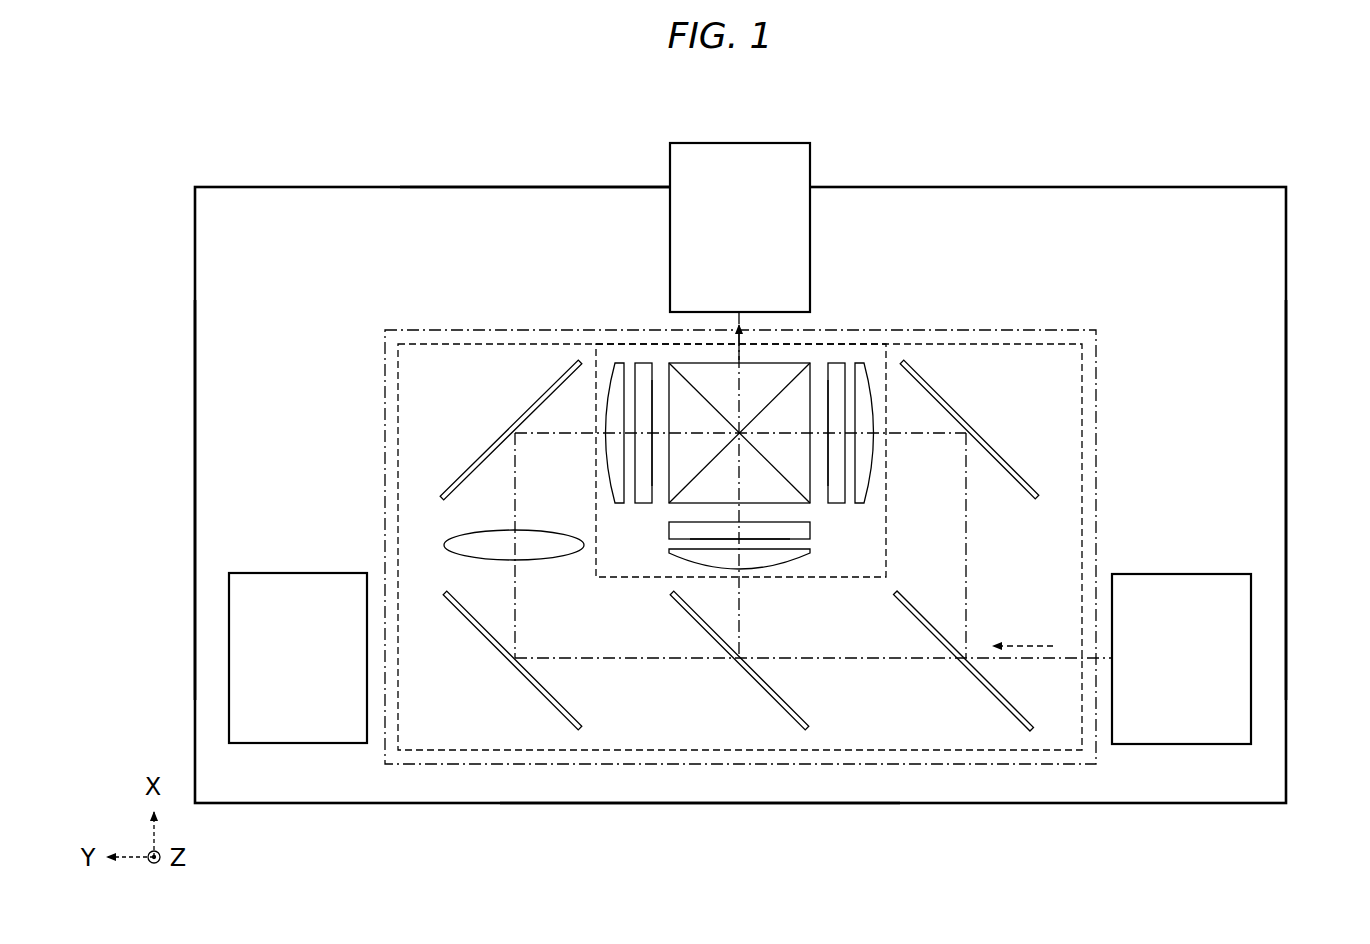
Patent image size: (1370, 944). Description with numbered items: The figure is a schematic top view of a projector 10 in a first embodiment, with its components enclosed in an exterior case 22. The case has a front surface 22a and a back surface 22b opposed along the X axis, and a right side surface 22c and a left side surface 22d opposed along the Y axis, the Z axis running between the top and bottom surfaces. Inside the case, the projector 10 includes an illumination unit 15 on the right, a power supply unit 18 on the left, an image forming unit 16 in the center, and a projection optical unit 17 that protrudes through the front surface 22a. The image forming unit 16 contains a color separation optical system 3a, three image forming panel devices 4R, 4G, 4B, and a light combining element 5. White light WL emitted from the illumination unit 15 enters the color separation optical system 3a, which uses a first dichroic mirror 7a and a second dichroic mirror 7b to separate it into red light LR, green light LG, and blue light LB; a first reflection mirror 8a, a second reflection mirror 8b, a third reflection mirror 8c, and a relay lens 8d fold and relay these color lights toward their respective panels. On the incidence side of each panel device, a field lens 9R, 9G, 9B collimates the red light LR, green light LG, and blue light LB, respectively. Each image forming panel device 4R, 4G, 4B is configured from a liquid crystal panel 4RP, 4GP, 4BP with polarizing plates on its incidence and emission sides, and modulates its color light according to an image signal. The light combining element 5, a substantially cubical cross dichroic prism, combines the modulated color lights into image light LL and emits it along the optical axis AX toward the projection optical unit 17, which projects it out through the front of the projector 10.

The projector 10 is at (398, 147).
The exterior case 22 is at (317, 182).
The front surface 22a is at (527, 186).
The back surface 22b is at (678, 804).
The right side surface 22c is at (1286, 520).
The left side surface 22d is at (195, 362).
The projection optical unit 17 is at (812, 157).
The image forming unit 16 is at (1099, 326).
The color separation optical system 3a is at (1082, 490).
The illumination unit 15 is at (1178, 744).
The power supply unit 18 is at (297, 744).
The light combining element 5 is at (722, 372).
The image forming panel device 4B is at (642, 358).
The liquid crystal panel 4BP is at (641, 380).
The field lens 9B is at (610, 368).
The image forming panel device 4R is at (838, 358).
The liquid crystal panel 4RP is at (840, 380).
The field lens 9R is at (862, 372).
The image forming panel device 4G is at (662, 524).
The liquid crystal panel 4GP is at (805, 530).
The field lens 9G is at (800, 553).
The first reflection mirror 8a is at (995, 440).
The second reflection mirror 8b is at (492, 640).
The third reflection mirror 8c is at (485, 456).
The relay lens 8d is at (450, 543).
The first dichroic mirror 7a is at (988, 697).
The second dichroic mirror 7b is at (762, 697).
The optical axis AX is at (742, 342).
The image light LL is at (732, 332).
The blue light LB is at (517, 605).
The green light LG is at (741, 605).
The red light LR is at (966, 532).
The white light WL is at (1030, 642).